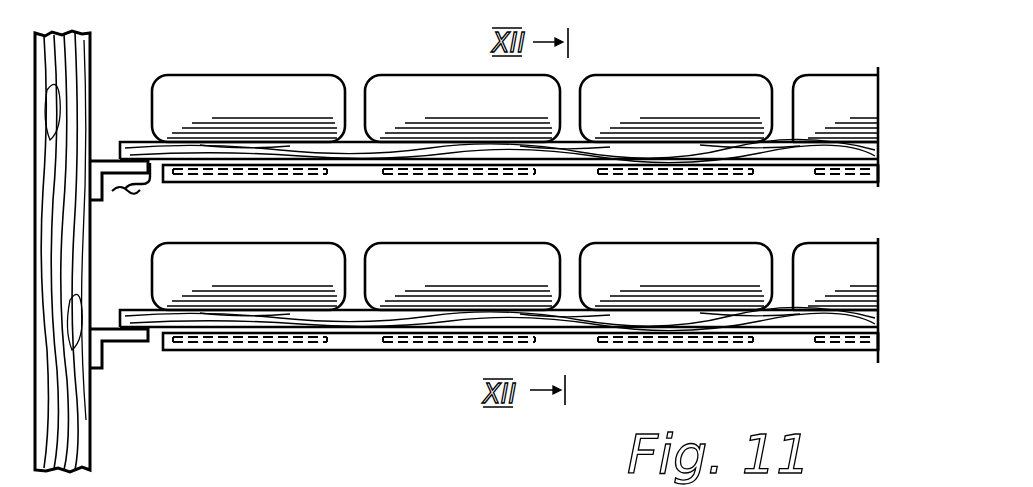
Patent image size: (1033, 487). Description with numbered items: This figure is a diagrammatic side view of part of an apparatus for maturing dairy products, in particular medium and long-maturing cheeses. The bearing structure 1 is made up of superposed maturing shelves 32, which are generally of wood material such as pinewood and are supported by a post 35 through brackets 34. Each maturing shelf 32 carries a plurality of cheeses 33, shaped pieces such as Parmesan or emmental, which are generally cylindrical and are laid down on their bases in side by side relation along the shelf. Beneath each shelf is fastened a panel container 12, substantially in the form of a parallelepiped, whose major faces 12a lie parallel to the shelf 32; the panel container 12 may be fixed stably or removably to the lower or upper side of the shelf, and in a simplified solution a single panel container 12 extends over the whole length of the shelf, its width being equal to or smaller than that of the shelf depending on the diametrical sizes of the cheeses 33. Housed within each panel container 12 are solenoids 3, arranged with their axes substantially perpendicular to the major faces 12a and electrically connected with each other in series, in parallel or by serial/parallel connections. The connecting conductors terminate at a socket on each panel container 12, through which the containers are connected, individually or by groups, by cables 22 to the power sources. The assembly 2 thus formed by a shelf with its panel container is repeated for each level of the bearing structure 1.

The bearing structure 1 is at (116, 251).
The insulating panel unit 2 is at (755, 63).
The solenoid 3 is at (263, 176).
The panel container 12 is at (353, 180).
The major face 12a is at (780, 183).
The cable 22 is at (146, 189).
The maturing shelf 32 is at (143, 142).
The cheese 33 is at (252, 76).
The bracket 34 is at (126, 365).
The post 35 is at (90, 231).